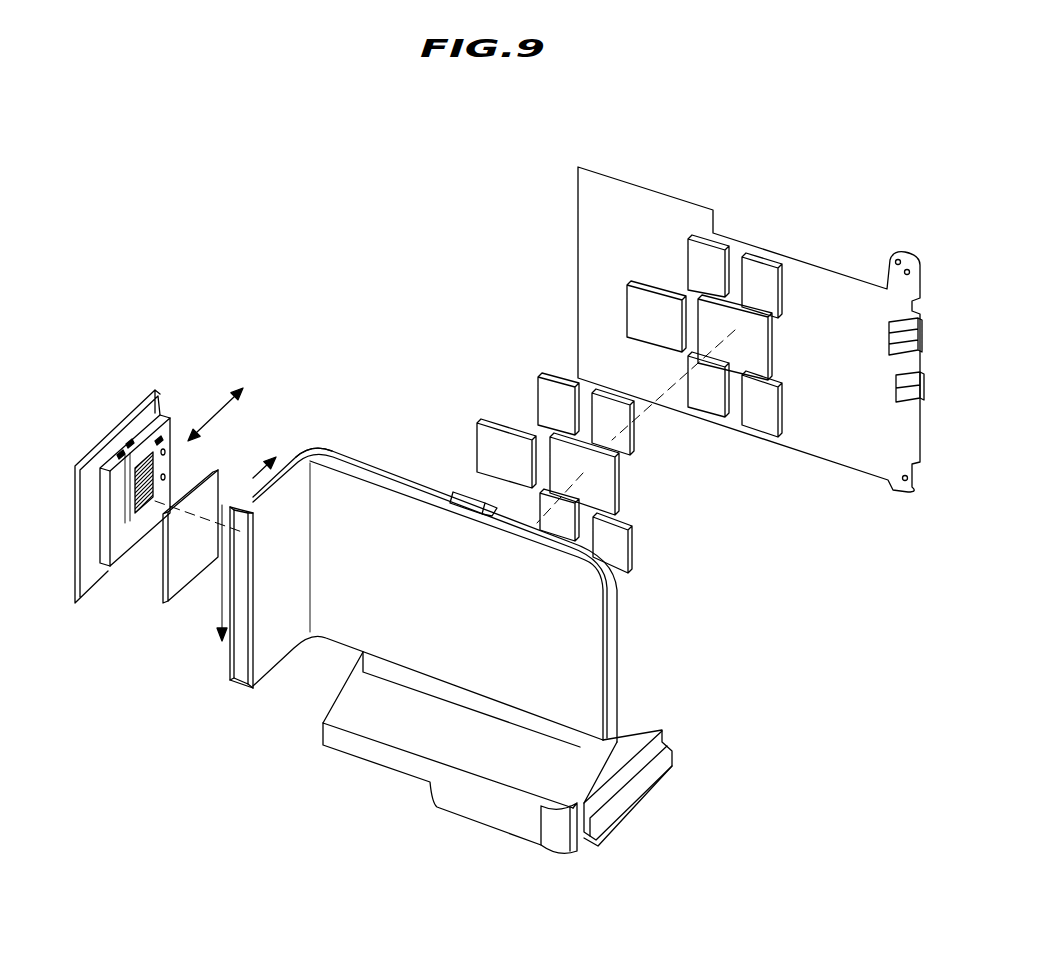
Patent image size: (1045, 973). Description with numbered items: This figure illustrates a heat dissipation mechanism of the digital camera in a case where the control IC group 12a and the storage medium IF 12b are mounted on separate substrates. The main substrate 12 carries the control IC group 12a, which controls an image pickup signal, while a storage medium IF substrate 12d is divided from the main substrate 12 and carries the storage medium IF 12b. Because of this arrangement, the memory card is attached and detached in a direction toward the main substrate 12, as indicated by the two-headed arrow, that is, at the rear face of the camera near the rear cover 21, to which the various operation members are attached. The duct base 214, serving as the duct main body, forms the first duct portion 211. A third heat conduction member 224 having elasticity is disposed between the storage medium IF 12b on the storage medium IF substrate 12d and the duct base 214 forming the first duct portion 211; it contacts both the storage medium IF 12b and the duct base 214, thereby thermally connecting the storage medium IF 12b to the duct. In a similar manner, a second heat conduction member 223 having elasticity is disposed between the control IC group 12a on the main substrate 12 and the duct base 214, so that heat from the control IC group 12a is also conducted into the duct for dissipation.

The main substrate 12 is at (598, 214).
The control integrated circuit (IC) group 12a is at (792, 245).
The storage medium IF 12b is at (174, 497).
The storage medium IF substrate 12d is at (108, 432).
The rear cover 21 is at (360, 441).
The first duct portion 211 is at (222, 600).
The duct base 214 is at (287, 465).
The second heat conduction member 223 is at (647, 382).
The third heat conduction member 224 is at (177, 565).